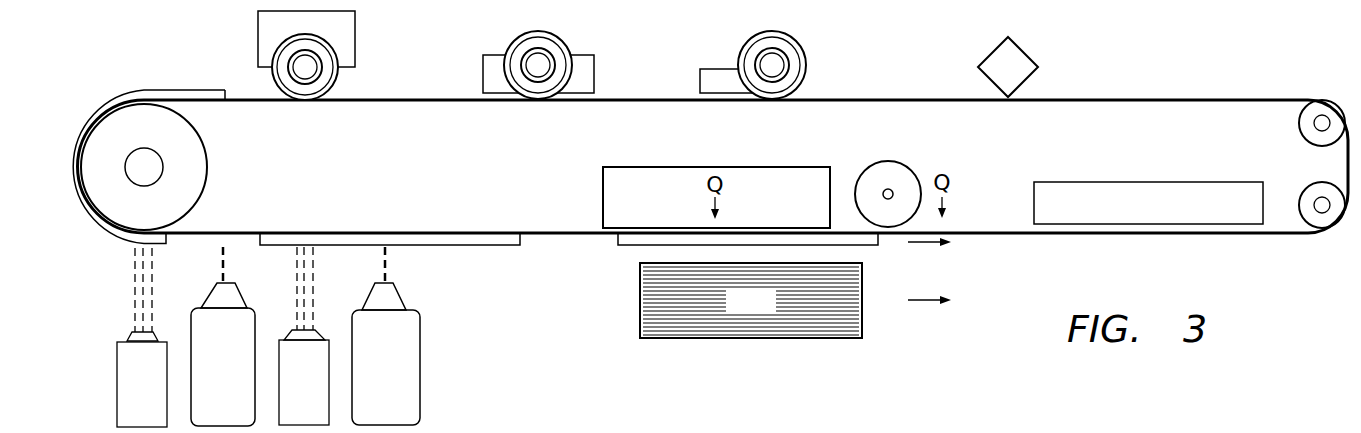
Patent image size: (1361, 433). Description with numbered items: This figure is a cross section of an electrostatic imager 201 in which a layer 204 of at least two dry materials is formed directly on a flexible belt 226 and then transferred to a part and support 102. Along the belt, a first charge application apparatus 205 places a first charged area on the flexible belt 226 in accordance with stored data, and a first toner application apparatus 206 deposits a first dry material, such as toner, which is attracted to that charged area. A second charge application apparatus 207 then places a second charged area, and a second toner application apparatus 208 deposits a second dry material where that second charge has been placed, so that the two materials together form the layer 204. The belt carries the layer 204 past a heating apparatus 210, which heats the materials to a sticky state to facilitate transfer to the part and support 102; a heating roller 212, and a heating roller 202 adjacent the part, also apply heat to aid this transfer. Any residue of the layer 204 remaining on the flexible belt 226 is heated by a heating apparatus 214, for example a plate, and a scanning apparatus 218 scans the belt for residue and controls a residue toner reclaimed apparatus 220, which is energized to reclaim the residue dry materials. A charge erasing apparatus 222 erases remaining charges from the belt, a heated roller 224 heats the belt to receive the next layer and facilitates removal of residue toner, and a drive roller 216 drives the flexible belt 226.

The part and support 102 is at (862, 320).
The electrostatic imager 201 is at (88, 90).
The heating roller 202 is at (202, 170).
The layer 204 is at (102, 238).
The first charge application apparatus 205 is at (117, 373).
The first toner application apparatus 206 is at (204, 300).
The second charge application apparatus 207 is at (323, 335).
The second toner application apparatus 208 is at (420, 348).
The heating apparatus 210 is at (603, 195).
The heating roller 212 is at (877, 168).
The heating apparatus 214 is at (1164, 188).
The drive roller 216 is at (1310, 195).
The scanning apparatus 218 is at (1028, 50).
The residue toner reclaimed apparatus 220 is at (804, 65).
The charge erasing apparatus 222 is at (560, 42).
The heated roller 224 is at (338, 72).
The flexible belt 226 is at (239, 97).